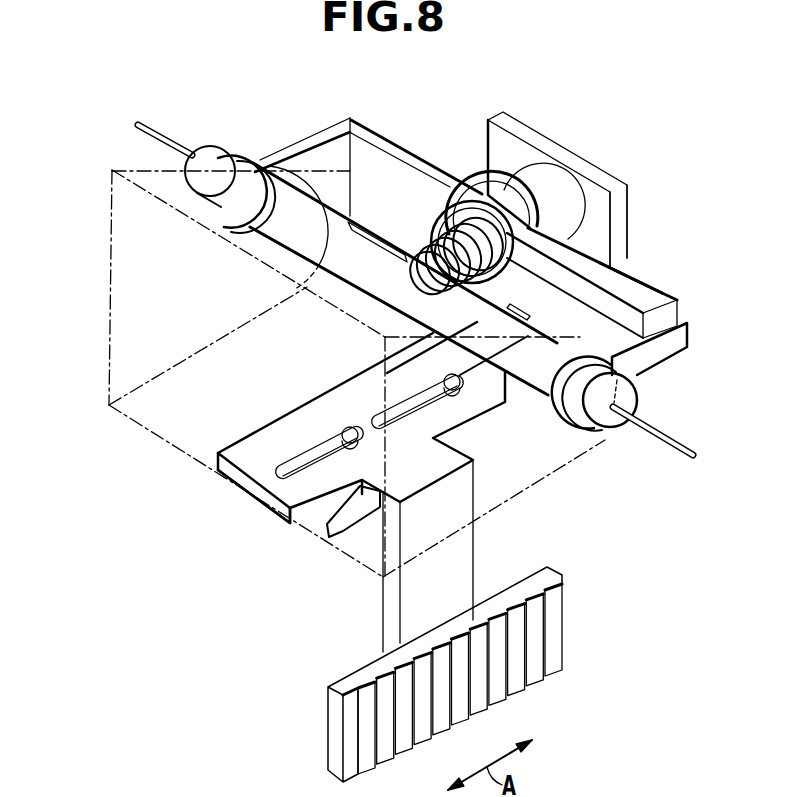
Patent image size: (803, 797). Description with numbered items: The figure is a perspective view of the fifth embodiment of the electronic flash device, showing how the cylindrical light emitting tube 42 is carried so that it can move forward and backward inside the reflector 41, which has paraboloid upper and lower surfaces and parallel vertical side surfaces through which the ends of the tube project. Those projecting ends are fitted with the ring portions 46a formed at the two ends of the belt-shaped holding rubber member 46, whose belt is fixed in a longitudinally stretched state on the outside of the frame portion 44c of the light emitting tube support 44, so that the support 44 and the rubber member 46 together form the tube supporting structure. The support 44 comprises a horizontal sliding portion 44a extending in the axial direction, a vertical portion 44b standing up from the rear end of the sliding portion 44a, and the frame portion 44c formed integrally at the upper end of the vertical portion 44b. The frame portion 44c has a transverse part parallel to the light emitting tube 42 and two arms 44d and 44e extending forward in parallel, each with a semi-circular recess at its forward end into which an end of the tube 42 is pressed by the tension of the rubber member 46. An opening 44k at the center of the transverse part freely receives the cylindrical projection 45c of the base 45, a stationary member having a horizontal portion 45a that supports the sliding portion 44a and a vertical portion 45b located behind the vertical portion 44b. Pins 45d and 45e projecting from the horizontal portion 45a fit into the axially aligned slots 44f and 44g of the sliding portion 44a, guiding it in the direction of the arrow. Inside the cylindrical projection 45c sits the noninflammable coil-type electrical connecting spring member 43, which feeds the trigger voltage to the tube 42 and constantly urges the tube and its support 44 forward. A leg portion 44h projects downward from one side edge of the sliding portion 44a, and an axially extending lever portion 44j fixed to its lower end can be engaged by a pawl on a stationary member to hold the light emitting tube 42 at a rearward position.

The reflector 41 is at (108, 240).
The light emitting tube 42 is at (277, 195).
The electrical connecting spring member 43 is at (448, 217).
The light emitting tube support 44 is at (650, 280).
The sliding portion 44a is at (233, 498).
The vertical portion 44b is at (447, 353).
The frame portion 44c is at (392, 142).
The arm 44d is at (315, 138).
The arm 44e is at (637, 313).
The slot 44f is at (338, 387).
The slot 44g is at (285, 477).
The leg portion 44h is at (472, 555).
The lever portion 44j is at (553, 650).
The opening 44k is at (467, 197).
The base 45 is at (603, 167).
The horizontal portion 45a is at (348, 533).
The vertical portion 45b is at (623, 220).
The cylindrical projection 45c is at (533, 177).
The pin 45d is at (418, 402).
The pin 45e is at (343, 430).
The holding rubber member 46 is at (680, 357).
The ring portion 46a is at (255, 167).